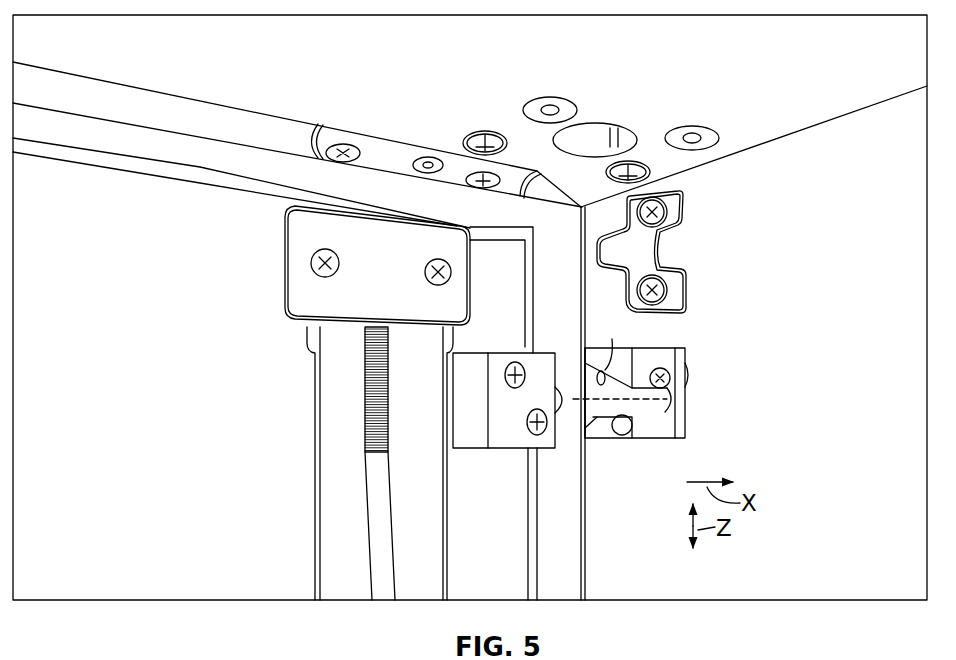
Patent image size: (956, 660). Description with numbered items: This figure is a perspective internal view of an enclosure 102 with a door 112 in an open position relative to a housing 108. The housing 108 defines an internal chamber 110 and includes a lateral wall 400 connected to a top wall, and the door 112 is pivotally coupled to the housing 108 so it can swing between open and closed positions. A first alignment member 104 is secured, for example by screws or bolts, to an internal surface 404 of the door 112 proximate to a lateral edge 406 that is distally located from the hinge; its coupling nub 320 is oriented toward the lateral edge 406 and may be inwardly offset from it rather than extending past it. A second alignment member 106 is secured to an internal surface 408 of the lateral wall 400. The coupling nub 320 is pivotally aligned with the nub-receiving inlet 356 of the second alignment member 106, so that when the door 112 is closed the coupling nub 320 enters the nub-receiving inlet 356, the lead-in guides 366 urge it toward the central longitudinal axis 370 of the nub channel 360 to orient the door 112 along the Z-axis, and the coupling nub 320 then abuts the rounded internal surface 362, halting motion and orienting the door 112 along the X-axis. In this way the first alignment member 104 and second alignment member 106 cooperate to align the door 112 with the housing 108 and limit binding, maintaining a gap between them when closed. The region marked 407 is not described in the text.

The enclosure 102 is at (594, 58).
The first alignment member 104 is at (508, 353).
The second alignment member 106 is at (686, 356).
The housing 108 is at (769, 318).
The internal chamber 110 is at (789, 234).
The door 112 is at (497, 227).
The coupling nub 320 is at (563, 410).
The nub-receiving inlet 356 is at (592, 408).
The nub channel 360 is at (642, 408).
The rounded internal surface 362 is at (672, 398).
The lead-in guides 366 is at (627, 458).
The central longitudinal axis 370 is at (643, 400).
The lateral wall 400 is at (712, 565).
The internal surface 404 is at (492, 280).
The lateral edge 406 is at (530, 300).
The top surface 407 is at (740, 66).
The internal surface 408 is at (652, 477).